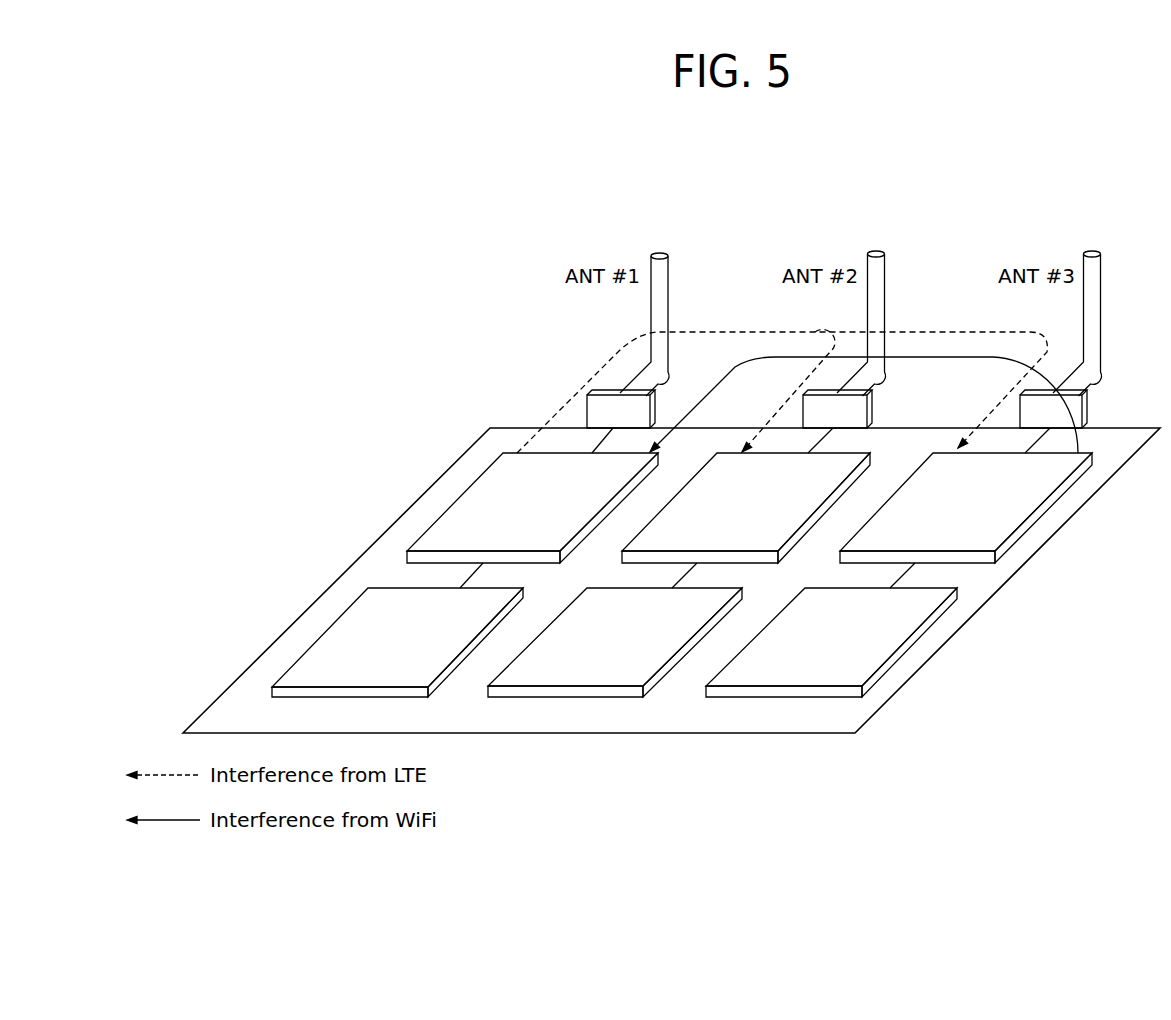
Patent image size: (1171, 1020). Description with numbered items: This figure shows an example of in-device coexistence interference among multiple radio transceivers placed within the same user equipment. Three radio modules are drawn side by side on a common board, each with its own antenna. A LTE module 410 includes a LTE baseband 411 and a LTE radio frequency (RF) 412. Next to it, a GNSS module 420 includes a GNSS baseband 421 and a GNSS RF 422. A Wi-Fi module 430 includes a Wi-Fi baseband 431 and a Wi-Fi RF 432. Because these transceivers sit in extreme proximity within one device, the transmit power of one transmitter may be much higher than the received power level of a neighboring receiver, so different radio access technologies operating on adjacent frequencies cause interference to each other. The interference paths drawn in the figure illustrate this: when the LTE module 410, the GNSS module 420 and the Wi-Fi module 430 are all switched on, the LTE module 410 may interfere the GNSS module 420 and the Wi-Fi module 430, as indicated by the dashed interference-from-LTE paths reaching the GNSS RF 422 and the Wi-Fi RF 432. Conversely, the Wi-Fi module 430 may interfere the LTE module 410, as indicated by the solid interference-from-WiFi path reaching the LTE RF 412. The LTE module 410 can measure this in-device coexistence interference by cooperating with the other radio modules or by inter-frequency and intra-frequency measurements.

The LTE module 410 is at (419, 554).
The LTE baseband 411 is at (323, 637).
The LTE radio frequency (RF) 412 is at (455, 500).
The GNSS module 420 is at (679, 612).
The GNSS baseband 421 is at (528, 677).
The GNSS RF 422 is at (643, 540).
The Wi-Fi module 430 is at (933, 562).
The Wi-Fi baseband 431 is at (902, 630).
The Wi-Fi RF 432 is at (1035, 497).